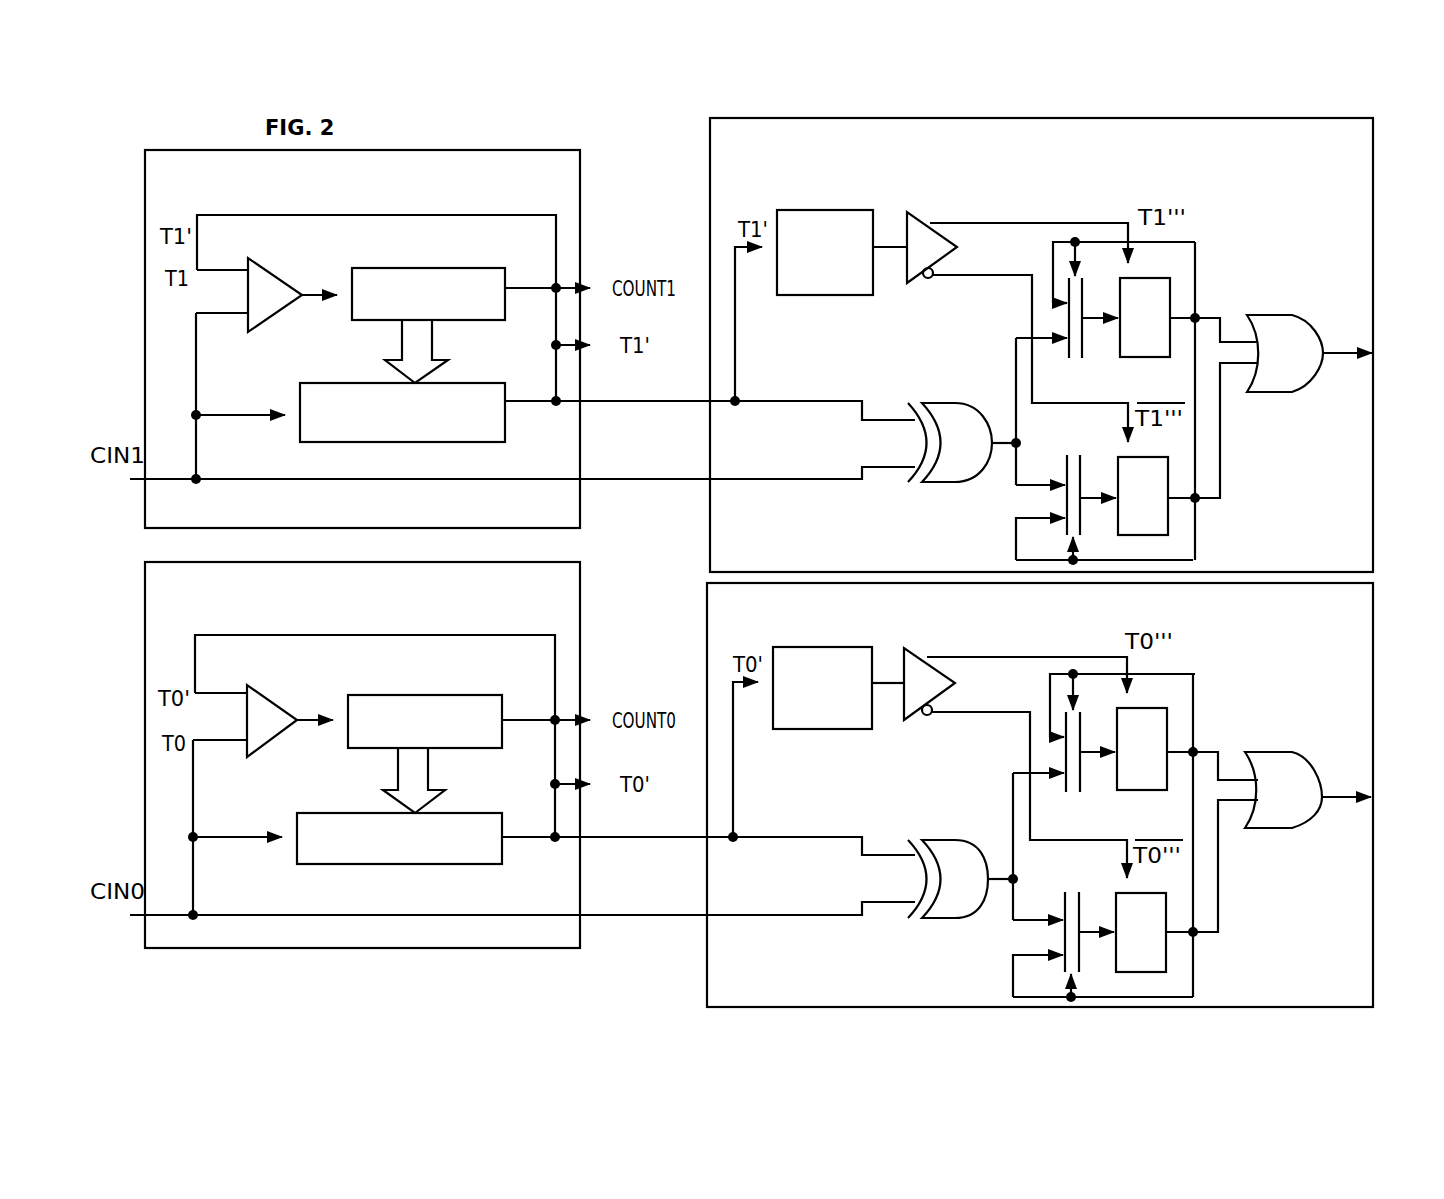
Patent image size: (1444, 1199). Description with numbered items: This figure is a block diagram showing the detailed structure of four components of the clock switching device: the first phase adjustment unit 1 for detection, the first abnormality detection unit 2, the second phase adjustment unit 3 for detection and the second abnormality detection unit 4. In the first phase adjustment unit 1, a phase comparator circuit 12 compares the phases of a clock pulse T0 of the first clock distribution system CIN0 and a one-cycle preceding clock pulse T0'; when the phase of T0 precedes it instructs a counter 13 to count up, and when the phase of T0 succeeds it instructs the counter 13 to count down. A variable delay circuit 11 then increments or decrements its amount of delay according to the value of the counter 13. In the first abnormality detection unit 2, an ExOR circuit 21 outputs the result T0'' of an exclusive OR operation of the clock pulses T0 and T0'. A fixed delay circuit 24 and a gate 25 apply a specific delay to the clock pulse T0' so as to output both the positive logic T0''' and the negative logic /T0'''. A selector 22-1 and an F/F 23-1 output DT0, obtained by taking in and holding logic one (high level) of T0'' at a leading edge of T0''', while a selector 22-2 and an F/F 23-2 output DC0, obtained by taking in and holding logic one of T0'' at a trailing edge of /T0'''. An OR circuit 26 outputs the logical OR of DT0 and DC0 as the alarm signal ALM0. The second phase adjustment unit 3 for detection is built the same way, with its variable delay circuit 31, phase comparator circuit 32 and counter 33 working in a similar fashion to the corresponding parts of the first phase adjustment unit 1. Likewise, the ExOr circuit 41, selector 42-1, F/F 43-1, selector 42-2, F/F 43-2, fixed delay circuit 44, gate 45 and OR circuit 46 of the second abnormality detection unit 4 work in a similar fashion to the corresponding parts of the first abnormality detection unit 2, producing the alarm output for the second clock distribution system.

The first phase adjustment unit for detection 1 is at (582, 610).
The variable delay circuit 11 is at (462, 812).
The phase comparator circuit 12 is at (258, 683).
The counter 13 is at (475, 693).
The first abnormality detection unit 2 is at (1375, 612).
The ExOR circuit 21 is at (935, 840).
The selector 22-1 is at (1082, 712).
The selector 22-2 is at (1064, 910).
The F/F (flip-flop circuit) 23-1 is at (1167, 710).
The F/F (flip-flop circuit) 23-2 is at (1166, 955).
The fixed delay circuit 24 is at (855, 647).
The gate 25 is at (918, 650).
The OR circuit 26 is at (1290, 750).
The second phase adjustment unit for detection 3 is at (582, 190).
The variable delay circuit 31 is at (462, 382).
The phase comparator circuit 32 is at (270, 270).
The counter 33 is at (470, 265).
The second abnormality detection unit 4 is at (1375, 188).
The ExOr circuit 41 is at (935, 402).
The selector 42-1 is at (1085, 278).
The selector 42-2 is at (1066, 472).
The F/F (flip-flop circuit) 43-1 is at (1170, 280).
The F/F (flip-flop circuit) 43-2 is at (1168, 520).
The fixed delay circuit 44 is at (855, 210).
The gate 45 is at (920, 213).
The OR circuit 46 is at (1290, 313).